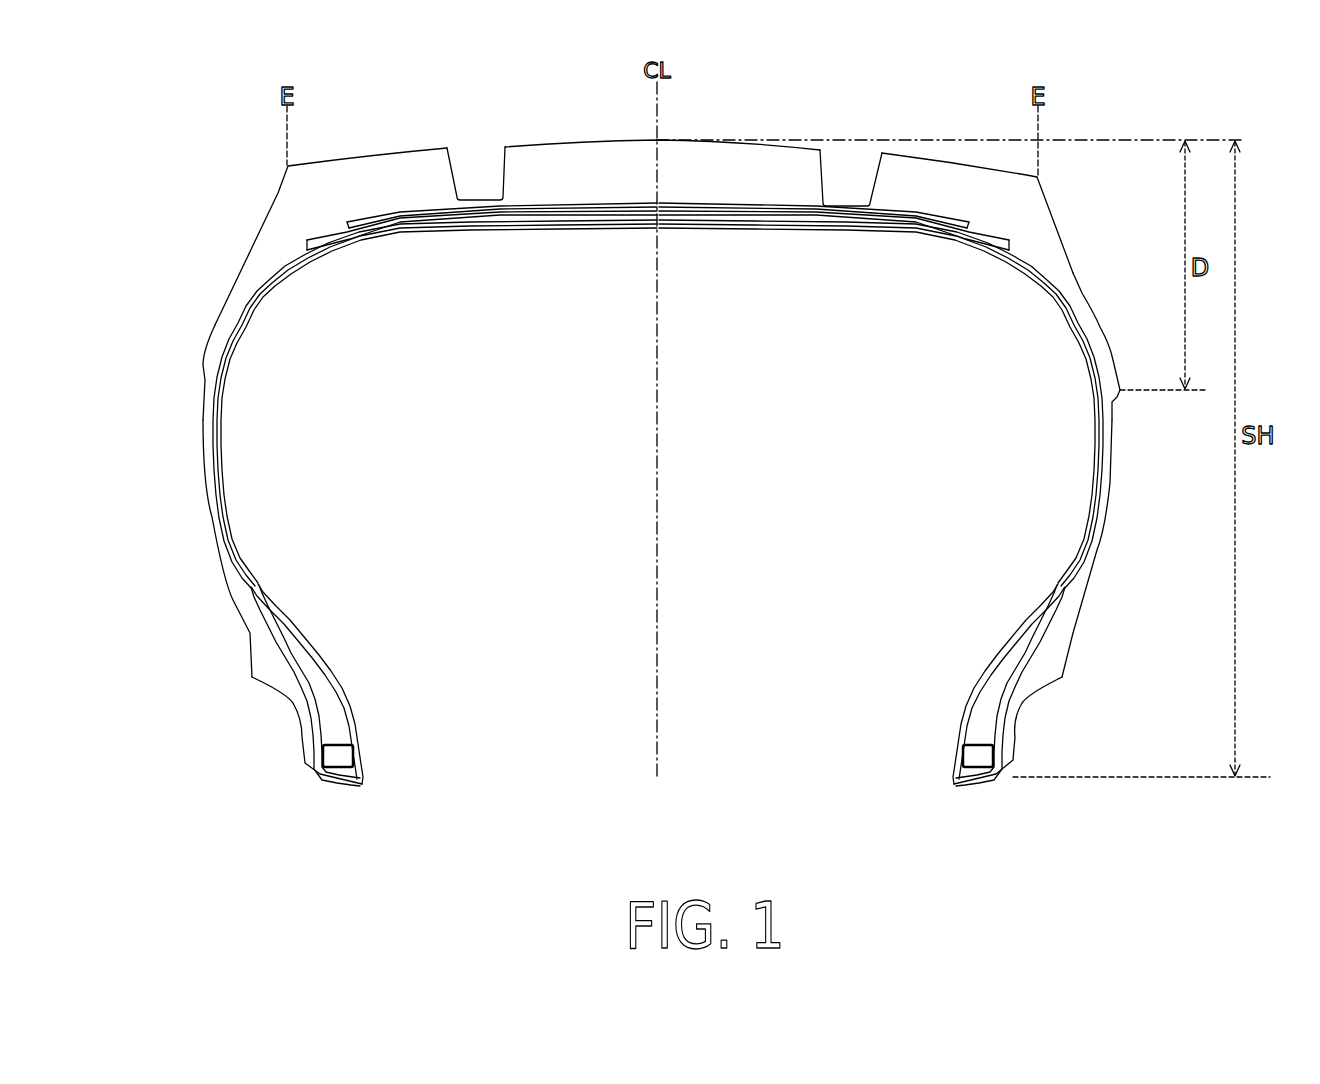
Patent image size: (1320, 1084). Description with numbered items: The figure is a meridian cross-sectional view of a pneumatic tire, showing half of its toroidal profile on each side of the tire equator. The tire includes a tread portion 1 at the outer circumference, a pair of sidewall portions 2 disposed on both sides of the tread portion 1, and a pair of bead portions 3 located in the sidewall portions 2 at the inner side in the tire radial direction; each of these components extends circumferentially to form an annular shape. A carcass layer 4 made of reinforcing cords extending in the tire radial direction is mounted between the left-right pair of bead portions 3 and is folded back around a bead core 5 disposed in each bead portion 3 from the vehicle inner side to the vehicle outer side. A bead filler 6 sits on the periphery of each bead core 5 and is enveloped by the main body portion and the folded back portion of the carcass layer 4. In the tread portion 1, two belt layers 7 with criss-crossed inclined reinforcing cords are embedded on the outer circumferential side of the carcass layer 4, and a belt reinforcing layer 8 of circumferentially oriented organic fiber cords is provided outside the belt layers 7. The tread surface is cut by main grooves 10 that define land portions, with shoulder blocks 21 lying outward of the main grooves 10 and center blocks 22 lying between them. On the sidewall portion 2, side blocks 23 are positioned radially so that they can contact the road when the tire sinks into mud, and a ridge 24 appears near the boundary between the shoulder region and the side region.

The tread portion 1 is at (630, 130).
The sidewall portion 2 is at (213, 517).
The bead portion 3 is at (286, 752).
The carcass layer 4 is at (303, 272).
The bead core 5 is at (342, 755).
The bead filler 6 is at (323, 697).
The belt layer 7 is at (578, 227).
The belt reinforcing layer 8 is at (482, 233).
The main groove 10 is at (481, 160).
The shoulder block 21 is at (347, 157).
The center block 22 is at (733, 140).
The side block 23 is at (1103, 326).
The ridge 24 is at (1082, 280).